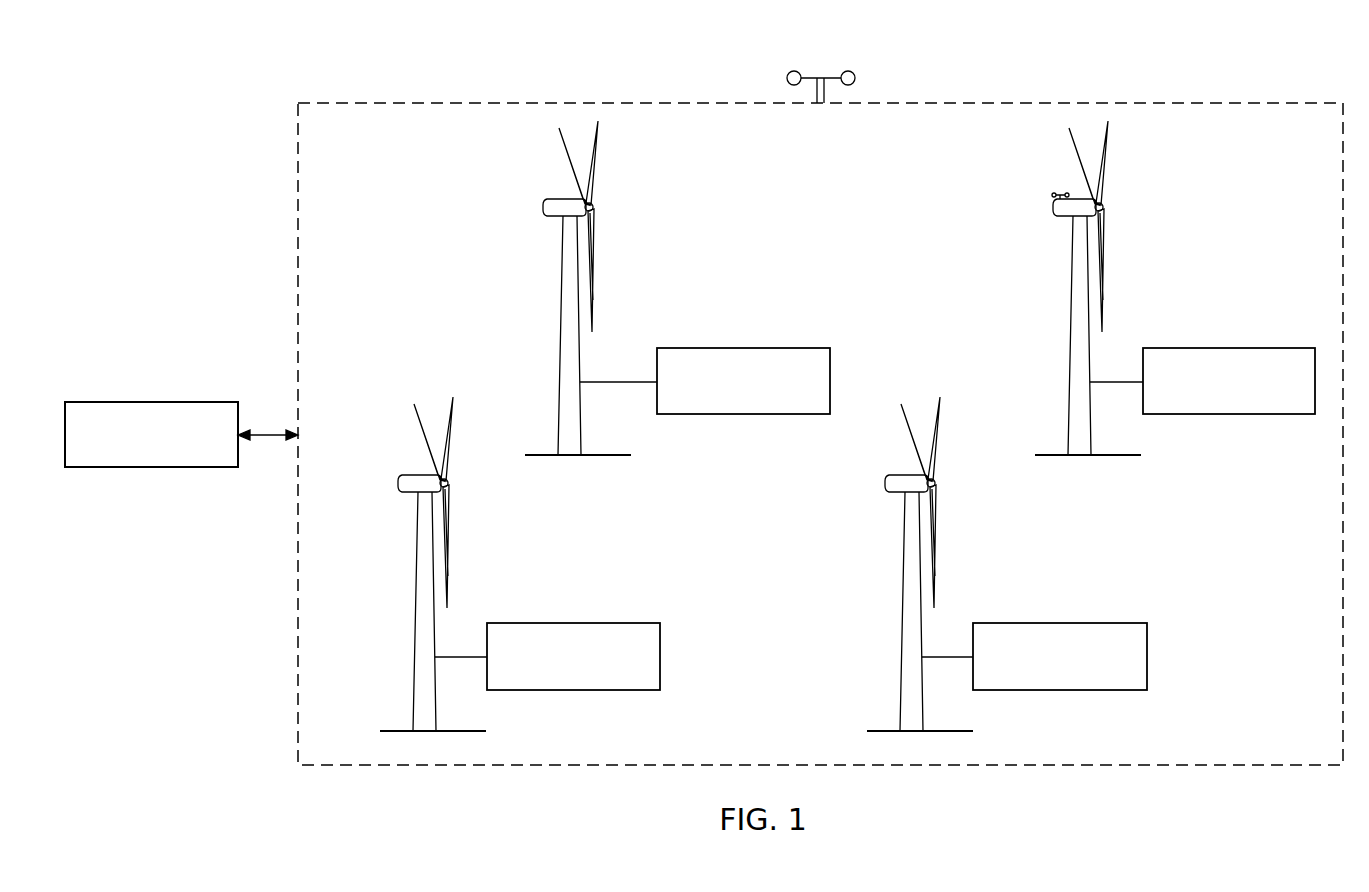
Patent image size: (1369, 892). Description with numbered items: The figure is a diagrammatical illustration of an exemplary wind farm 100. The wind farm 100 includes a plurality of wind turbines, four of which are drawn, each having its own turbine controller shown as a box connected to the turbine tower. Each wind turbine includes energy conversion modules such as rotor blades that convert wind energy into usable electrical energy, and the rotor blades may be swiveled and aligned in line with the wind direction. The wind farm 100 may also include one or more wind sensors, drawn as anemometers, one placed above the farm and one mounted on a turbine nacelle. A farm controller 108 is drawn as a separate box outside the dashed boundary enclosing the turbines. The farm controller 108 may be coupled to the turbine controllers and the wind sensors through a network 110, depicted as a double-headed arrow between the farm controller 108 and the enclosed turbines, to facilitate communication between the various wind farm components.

The wind farm 100 is at (175, 90).
The farm controller 108 is at (150, 402).
The network 110 is at (258, 433).